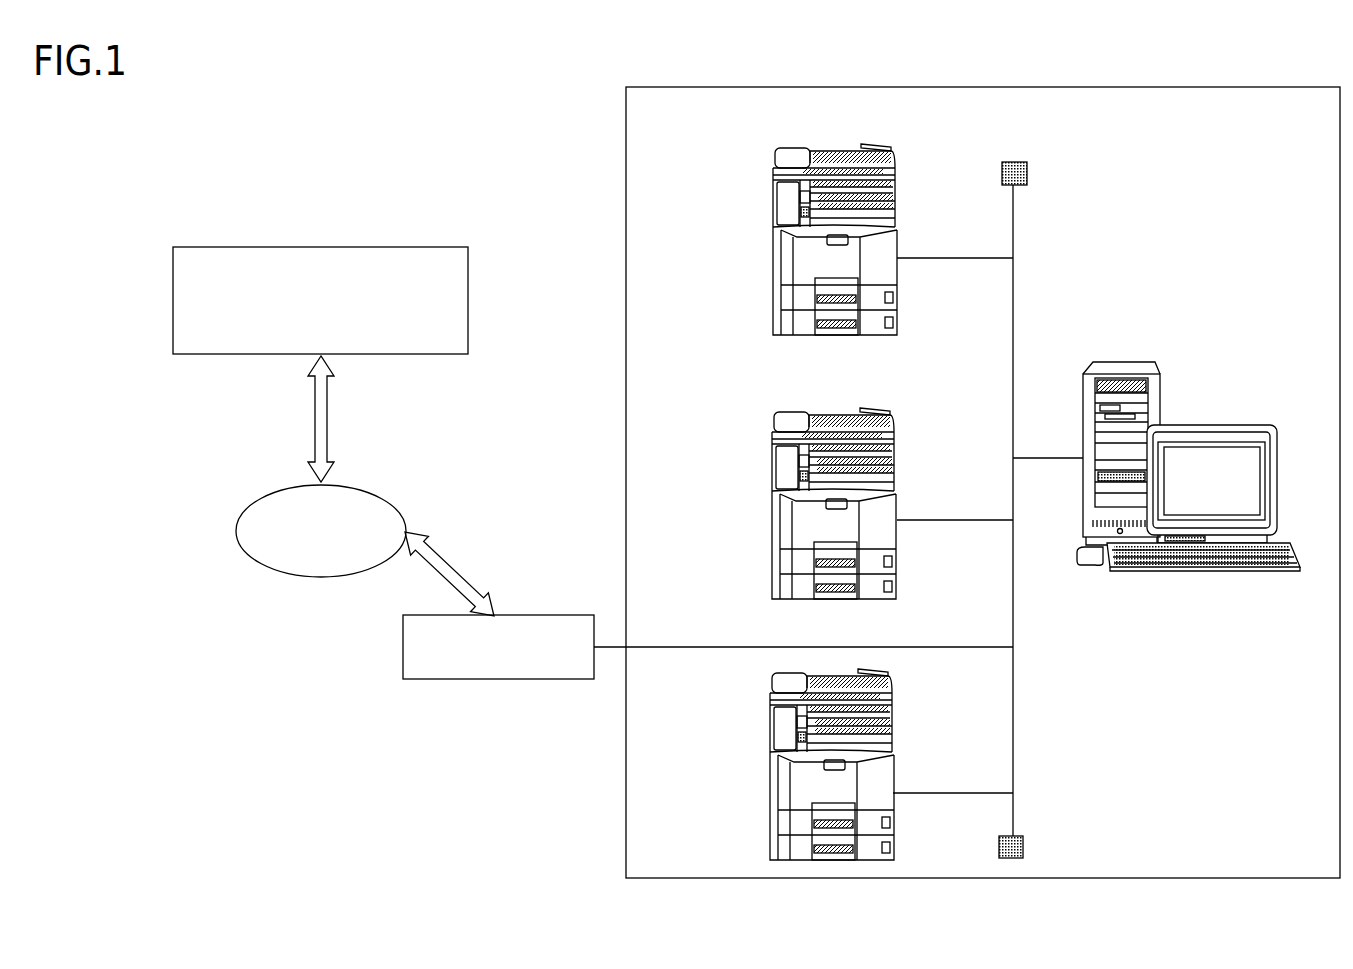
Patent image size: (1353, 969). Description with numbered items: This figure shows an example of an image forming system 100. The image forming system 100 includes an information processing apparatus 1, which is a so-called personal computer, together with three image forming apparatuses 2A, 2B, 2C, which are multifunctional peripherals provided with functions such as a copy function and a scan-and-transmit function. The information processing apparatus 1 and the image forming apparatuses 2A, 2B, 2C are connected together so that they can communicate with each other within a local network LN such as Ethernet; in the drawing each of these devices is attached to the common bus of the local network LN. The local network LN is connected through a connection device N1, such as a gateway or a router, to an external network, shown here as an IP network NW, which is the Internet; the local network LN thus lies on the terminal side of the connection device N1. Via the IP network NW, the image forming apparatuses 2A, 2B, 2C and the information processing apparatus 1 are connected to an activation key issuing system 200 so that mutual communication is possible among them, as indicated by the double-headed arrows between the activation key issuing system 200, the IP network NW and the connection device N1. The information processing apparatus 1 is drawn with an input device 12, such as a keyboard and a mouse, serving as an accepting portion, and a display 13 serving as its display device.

The image forming system 100 is at (636, 120).
The activation key issuing system 200 is at (472, 301).
The IP network NW is at (321, 578).
The connection device N1 is at (531, 680).
The local network LN is at (1040, 212).
The image forming apparatus 2A is at (775, 263).
The image forming apparatus 2B is at (787, 525).
The image forming apparatus 2C is at (780, 788).
The information processing apparatus 1 is at (1117, 362).
The display 13 is at (1213, 437).
The input device 12 is at (1187, 571).